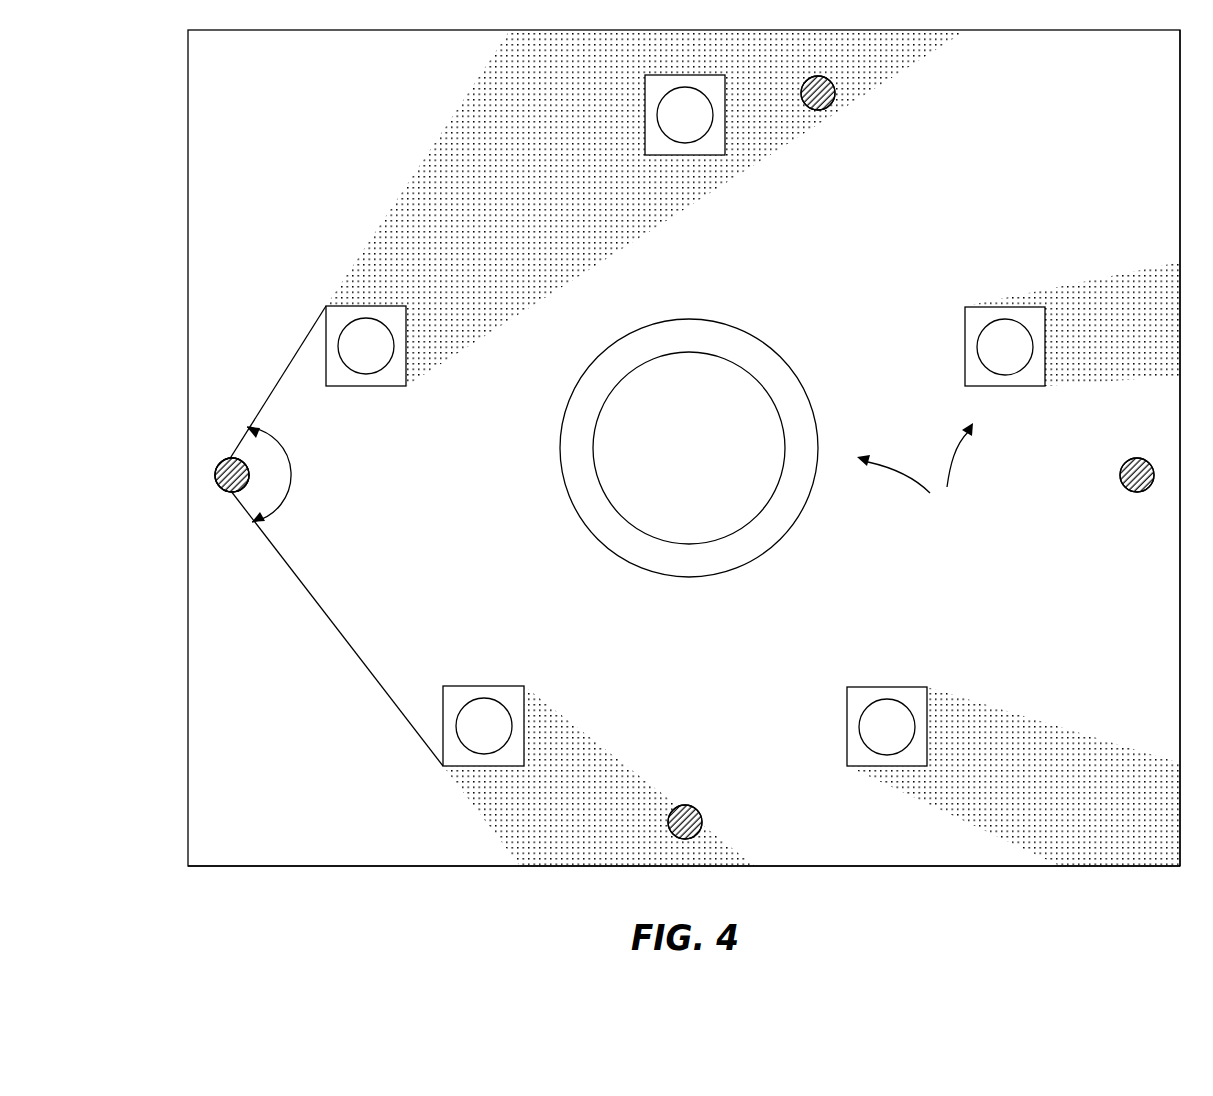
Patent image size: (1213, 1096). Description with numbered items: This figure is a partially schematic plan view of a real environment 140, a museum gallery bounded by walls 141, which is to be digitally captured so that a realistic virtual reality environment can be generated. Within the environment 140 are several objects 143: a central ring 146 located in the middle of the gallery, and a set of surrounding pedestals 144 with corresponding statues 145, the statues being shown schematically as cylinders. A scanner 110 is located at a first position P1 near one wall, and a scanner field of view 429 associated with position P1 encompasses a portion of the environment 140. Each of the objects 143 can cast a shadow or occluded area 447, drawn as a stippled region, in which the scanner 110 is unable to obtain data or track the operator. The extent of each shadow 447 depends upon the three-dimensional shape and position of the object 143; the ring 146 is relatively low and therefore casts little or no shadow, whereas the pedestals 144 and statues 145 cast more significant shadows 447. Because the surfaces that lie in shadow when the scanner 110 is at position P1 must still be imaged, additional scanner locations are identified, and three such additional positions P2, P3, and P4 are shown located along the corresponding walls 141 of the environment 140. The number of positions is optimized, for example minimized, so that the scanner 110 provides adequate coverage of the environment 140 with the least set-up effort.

The real environment 140 is at (200, 110).
The walls 141 is at (800, 866).
The objects 143 is at (915, 471).
The pedestals 144 is at (713, 157).
The statues 145 is at (675, 143).
The central ring 146 is at (795, 376).
The shadow or occluded area 447 is at (753, 448).
The scanner field of view 429 is at (278, 454).
The scanner 110 is at (216, 470).
The first position P1 is at (224, 489).
The second position P2 is at (683, 805).
The third position P3 is at (1130, 458).
The fourth position P4 is at (830, 109).